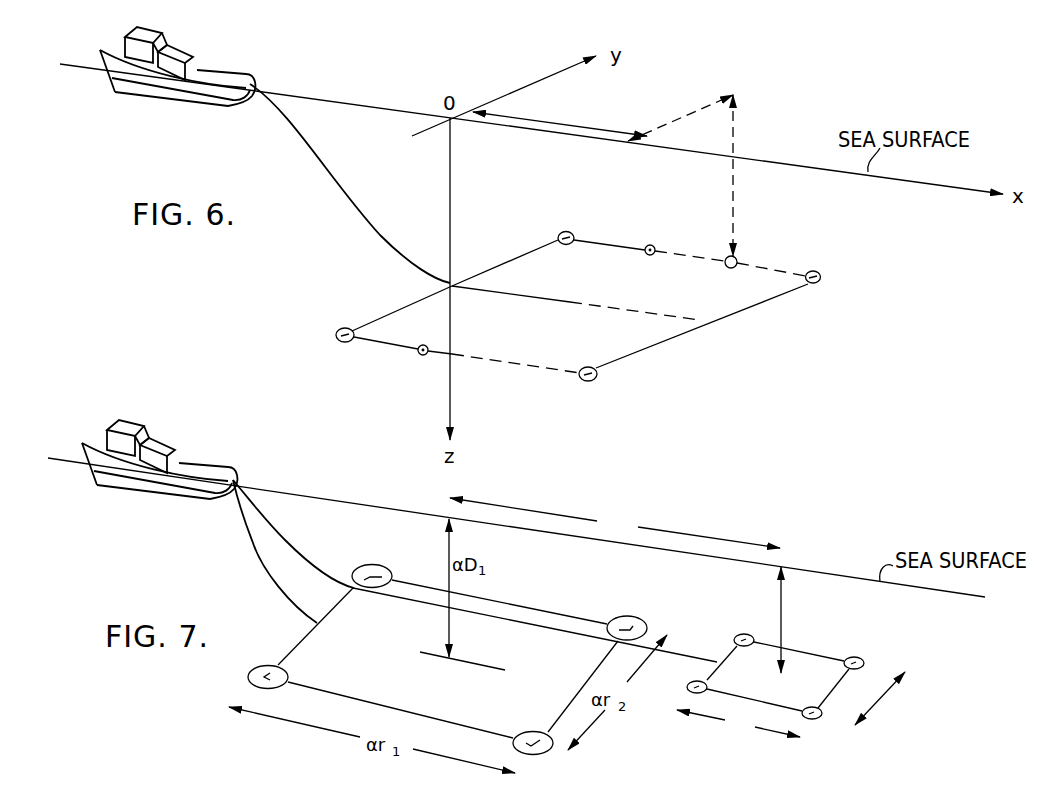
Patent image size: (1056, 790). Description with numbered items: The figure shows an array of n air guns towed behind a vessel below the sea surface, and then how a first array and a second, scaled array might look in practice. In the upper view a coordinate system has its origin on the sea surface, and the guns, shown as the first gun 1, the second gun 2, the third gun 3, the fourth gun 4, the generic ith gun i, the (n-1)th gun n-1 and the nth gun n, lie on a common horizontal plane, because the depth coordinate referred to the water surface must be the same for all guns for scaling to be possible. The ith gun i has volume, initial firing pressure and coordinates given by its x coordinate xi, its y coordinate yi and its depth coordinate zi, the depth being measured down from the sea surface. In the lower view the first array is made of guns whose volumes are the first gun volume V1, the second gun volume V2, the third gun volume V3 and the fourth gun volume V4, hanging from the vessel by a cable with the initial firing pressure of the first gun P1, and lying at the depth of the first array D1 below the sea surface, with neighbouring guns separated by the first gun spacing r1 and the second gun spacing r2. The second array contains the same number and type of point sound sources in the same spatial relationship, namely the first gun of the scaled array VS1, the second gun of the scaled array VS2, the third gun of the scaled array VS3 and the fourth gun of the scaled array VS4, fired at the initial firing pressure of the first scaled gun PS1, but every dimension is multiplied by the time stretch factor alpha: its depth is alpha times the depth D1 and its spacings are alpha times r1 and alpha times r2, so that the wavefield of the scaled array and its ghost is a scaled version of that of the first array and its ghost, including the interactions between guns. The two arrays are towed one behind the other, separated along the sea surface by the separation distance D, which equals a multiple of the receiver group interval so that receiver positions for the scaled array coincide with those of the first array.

In FIG. 6, the first gun 1 is at (566, 228).
In FIG. 6, the second gun 2 is at (343, 322).
In FIG. 6, the third gun 3 is at (648, 238).
In FIG. 6, the fourth gun 4 is at (427, 337).
In FIG. 6, the ith gun i is at (726, 253).
In FIG. 6, the nth gun n is at (588, 362).
In FIG. 6, the (n-1)th gun n-1 is at (831, 267).
In FIG. 6, the x coordinate of the ith gun xi is at (560, 117).
In FIG. 6, the y coordinate of the ith gun yi is at (680, 118).
In FIG. 6, the depth coordinate of the ith gun zi is at (744, 175).
In FIG. 7, the first gun of the scaled array VS1 is at (251, 685).
In FIG. 7, the second gun of the scaled array VS2 is at (372, 562).
In FIG. 7, the third gun of the scaled array VS3 is at (642, 622).
In FIG. 7, the fourth gun of the scaled array VS4 is at (539, 759).
In FIG. 7, the first gun volume V1 is at (686, 695).
In FIG. 7, the second gun volume V2 is at (735, 628).
In FIG. 7, the third gun volume V3 is at (865, 657).
In FIG. 7, the fourth gun volume V4 is at (820, 727).
In FIG. 7, the initial firing pressure of the first gun P1 is at (280, 533).
In FIG. 7, the initial firing pressure of the first scaled gun PS1 is at (250, 554).
In FIG. 7, the separation distance D is at (615, 523).
In FIG. 7, the depth of the first array D1 is at (794, 620).
In FIG. 7, the first gun spacing r1 is at (738, 724).
In FIG. 7, the second gun spacing r2 is at (880, 698).